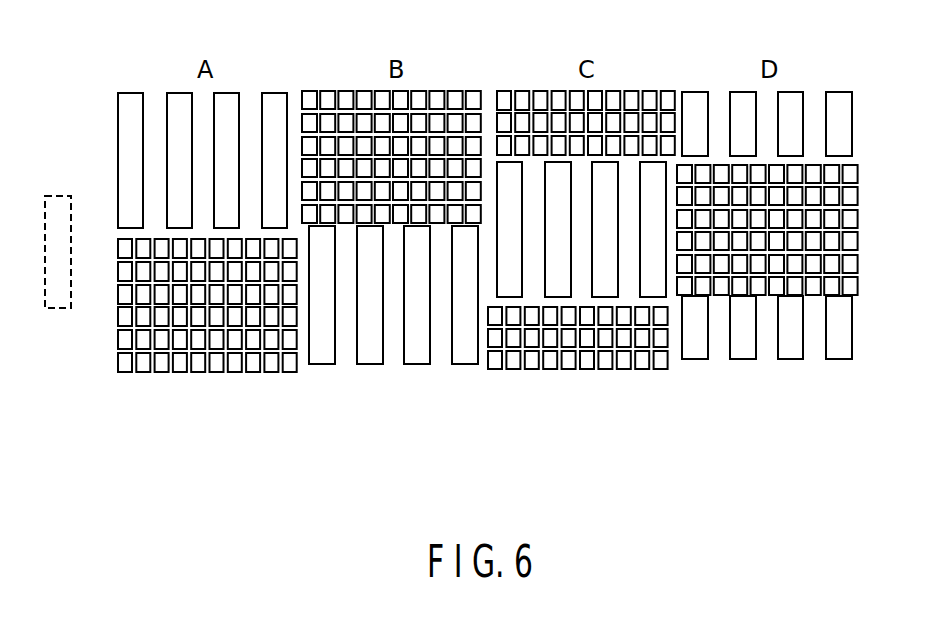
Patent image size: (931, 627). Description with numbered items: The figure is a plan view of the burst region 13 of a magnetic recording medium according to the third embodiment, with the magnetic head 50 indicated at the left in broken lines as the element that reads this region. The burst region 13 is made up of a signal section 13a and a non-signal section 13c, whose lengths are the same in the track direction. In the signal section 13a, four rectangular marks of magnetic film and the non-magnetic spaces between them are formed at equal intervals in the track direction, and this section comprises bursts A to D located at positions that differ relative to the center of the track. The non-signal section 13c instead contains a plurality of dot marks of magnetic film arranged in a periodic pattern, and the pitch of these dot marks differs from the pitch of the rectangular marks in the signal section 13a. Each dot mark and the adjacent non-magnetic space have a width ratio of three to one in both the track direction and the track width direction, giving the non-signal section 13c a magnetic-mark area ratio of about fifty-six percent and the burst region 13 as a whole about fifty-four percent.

The burst region 13 is at (488, 301).
The signal section 13a is at (584, 268).
The non-signal section 13c is at (767, 281).
The magnetic head 50 is at (61, 196).